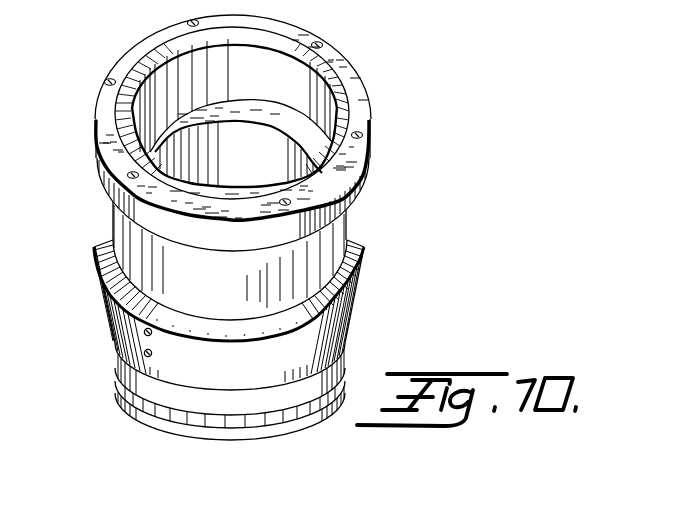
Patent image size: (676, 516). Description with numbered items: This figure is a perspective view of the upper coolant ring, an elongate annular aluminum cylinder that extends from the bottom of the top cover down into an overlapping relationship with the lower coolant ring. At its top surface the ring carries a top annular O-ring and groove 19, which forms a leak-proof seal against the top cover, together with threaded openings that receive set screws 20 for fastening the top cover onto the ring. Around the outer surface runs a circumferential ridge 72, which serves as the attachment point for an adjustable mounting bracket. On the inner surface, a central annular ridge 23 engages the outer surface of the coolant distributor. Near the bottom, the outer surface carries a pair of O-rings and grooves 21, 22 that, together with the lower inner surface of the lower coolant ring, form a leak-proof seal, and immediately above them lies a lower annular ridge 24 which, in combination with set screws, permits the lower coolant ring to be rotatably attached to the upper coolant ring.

The top annular O-ring and groove 19 is at (99, 91).
The set screws 20 is at (97, 166).
The O-ring and groove 21 is at (117, 367).
The O-ring and groove 22 is at (118, 398).
The central annular ridge 23 is at (282, 120).
The lower annular ridge 24 is at (348, 350).
The circumferential ridge 72 is at (362, 287).